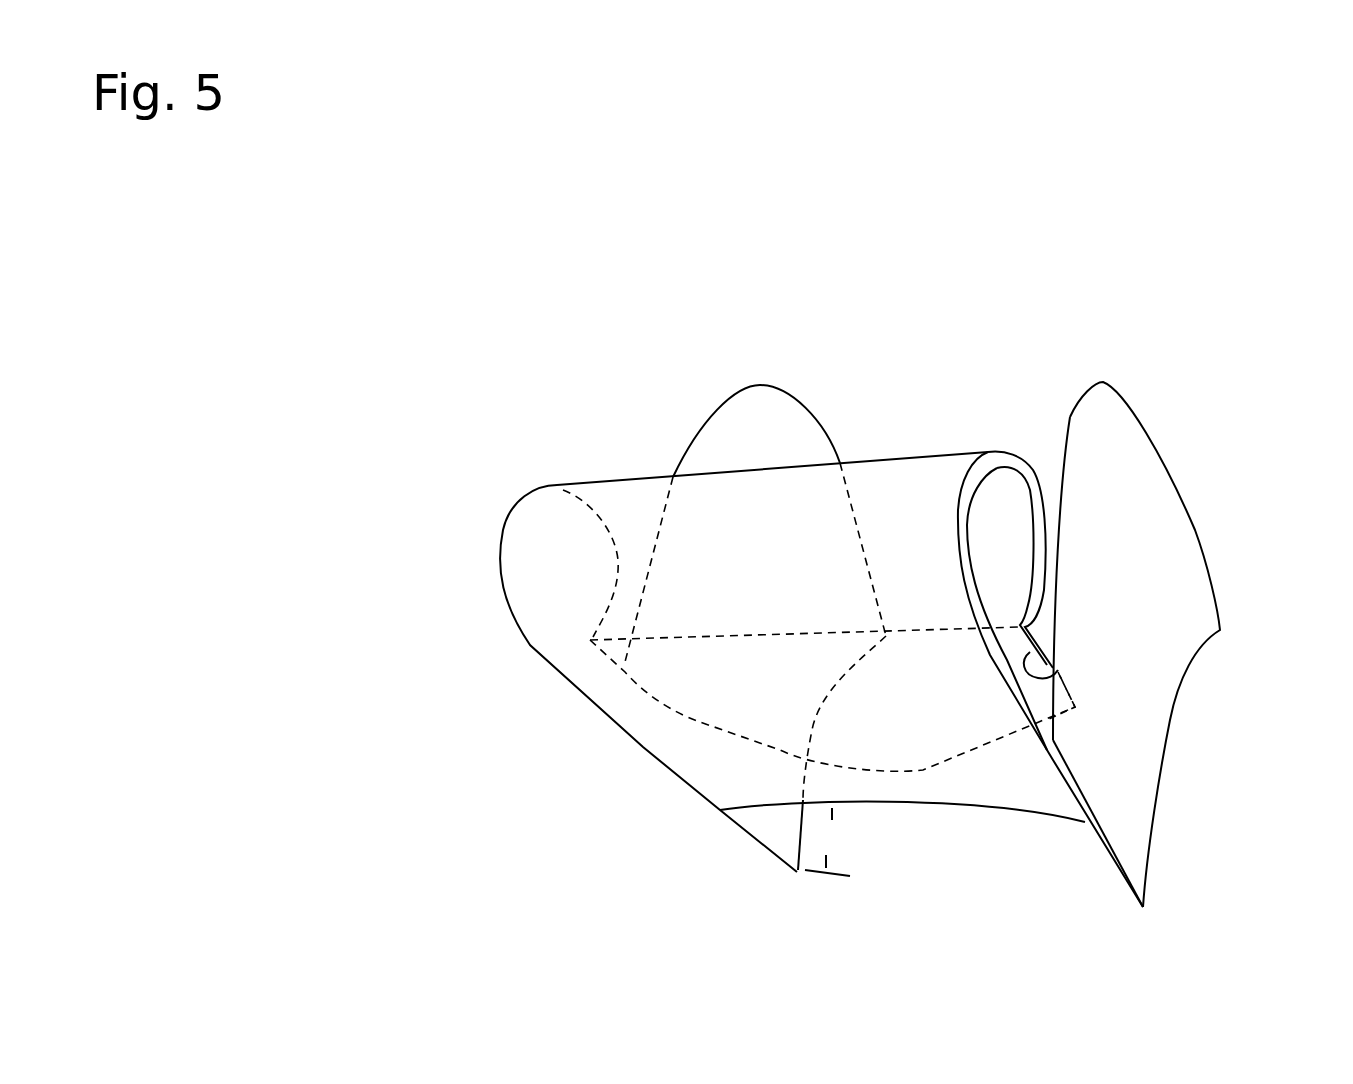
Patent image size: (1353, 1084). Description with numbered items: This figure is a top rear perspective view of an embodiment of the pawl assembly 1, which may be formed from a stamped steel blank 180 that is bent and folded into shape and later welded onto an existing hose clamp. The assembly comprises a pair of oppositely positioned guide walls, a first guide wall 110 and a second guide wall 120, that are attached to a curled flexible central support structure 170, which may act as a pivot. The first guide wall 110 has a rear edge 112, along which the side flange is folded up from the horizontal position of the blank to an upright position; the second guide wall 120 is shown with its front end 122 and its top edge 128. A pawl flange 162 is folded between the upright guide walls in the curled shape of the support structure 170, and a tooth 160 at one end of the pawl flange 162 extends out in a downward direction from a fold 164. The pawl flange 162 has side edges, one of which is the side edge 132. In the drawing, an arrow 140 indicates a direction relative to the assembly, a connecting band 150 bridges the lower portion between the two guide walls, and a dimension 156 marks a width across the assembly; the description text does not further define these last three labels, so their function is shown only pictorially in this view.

The fastening device 1 is at (827, 340).
The first guide wall 110 is at (743, 432).
The rear edge 112 is at (643, 747).
The second guide wall 120 is at (1143, 558).
The front end 122 is at (1213, 594).
The top edge 128 is at (1070, 417).
The side edge 132 is at (1097, 840).
The direction 140 is at (497, 676).
The connecting band 150 is at (950, 810).
The width 156 is at (703, 783).
The tooth 160 is at (863, 767).
The pawl flange 162 is at (1060, 673).
The fold 164 is at (1033, 626).
The curled flexible central support structure 170 is at (893, 500).
The stamped blank 180 is at (827, 842).